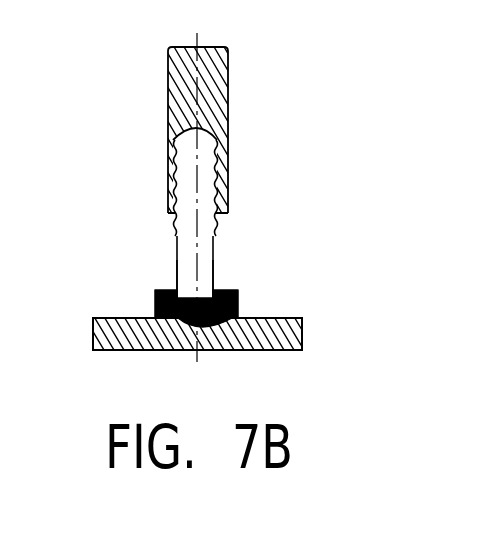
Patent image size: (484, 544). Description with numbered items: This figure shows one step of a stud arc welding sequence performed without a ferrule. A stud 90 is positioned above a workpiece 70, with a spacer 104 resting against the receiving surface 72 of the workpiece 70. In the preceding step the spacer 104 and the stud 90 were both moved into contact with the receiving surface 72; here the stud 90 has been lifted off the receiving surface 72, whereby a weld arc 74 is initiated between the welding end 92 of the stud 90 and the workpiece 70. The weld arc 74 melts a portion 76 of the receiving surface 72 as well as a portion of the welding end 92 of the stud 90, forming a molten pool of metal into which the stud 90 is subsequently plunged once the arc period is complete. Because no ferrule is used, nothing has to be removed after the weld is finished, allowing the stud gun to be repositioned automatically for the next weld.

The workpiece 70 is at (302, 333).
The receiving surface 72 is at (120, 317).
The weld arc 74 is at (160, 288).
The portion of receiving surface 76 is at (250, 350).
The stud 90 is at (215, 250).
The welding end 92 is at (215, 267).
The spacer 104 is at (237, 305).